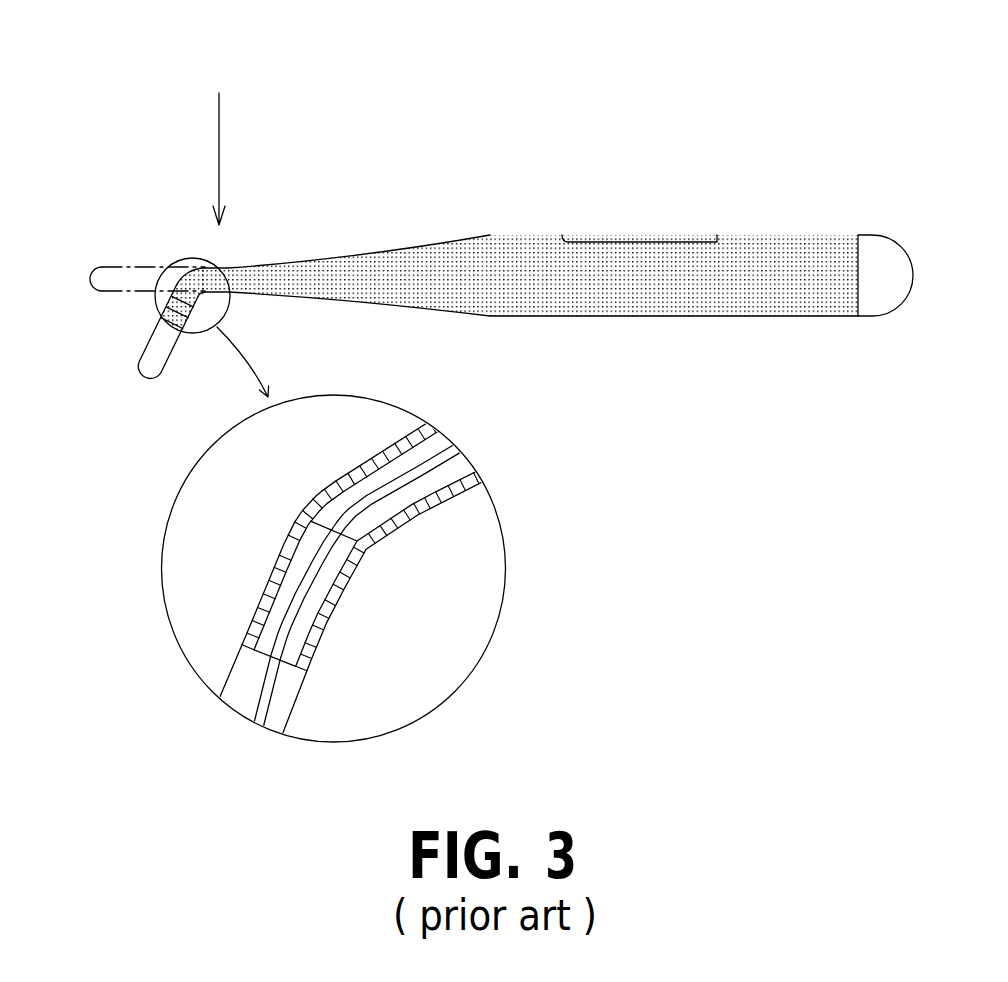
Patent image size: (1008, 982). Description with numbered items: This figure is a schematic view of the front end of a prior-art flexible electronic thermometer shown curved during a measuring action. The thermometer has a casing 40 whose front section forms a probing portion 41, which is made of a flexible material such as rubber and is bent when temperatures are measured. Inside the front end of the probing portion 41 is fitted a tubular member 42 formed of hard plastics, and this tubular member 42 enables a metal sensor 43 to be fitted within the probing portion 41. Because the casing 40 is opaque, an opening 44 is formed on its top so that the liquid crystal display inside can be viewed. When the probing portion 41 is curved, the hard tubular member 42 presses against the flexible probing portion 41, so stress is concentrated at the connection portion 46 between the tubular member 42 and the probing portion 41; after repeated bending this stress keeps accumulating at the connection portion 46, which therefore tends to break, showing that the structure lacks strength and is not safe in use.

The casing 40 is at (532, 250).
The probing portion 41 is at (372, 262).
The tubular member 42 is at (347, 590).
The metal sensor 43 is at (155, 354).
The opening 44 is at (650, 235).
The connection portion 46 is at (180, 273).